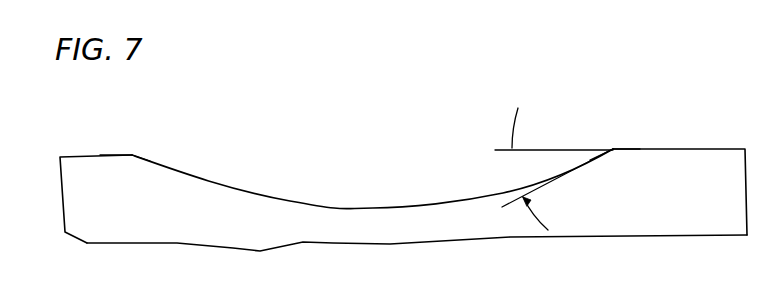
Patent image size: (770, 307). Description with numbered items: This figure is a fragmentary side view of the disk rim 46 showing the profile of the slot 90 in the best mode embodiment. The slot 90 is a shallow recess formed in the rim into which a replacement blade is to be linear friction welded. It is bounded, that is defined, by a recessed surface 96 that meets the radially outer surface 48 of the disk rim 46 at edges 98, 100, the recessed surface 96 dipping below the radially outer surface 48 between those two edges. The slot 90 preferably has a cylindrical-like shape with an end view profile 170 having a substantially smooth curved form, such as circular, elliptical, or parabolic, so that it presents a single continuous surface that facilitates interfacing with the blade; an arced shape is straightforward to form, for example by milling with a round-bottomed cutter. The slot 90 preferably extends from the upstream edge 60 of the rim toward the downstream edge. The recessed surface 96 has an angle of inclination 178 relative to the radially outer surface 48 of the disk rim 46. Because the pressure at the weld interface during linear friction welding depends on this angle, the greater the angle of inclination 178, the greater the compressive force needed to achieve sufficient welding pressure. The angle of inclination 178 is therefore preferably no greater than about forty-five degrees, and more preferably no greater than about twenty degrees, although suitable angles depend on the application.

The disk rim 46 is at (638, 95).
The radially outer surface 48 is at (70, 155).
The upstream edge 60 is at (672, 237).
The slot 90 is at (377, 153).
The recessed surface 96 is at (235, 190).
The edge 98 is at (620, 148).
The edge 100 is at (132, 155).
The end view profile 170 is at (415, 204).
The angle of inclination 178 is at (546, 189).